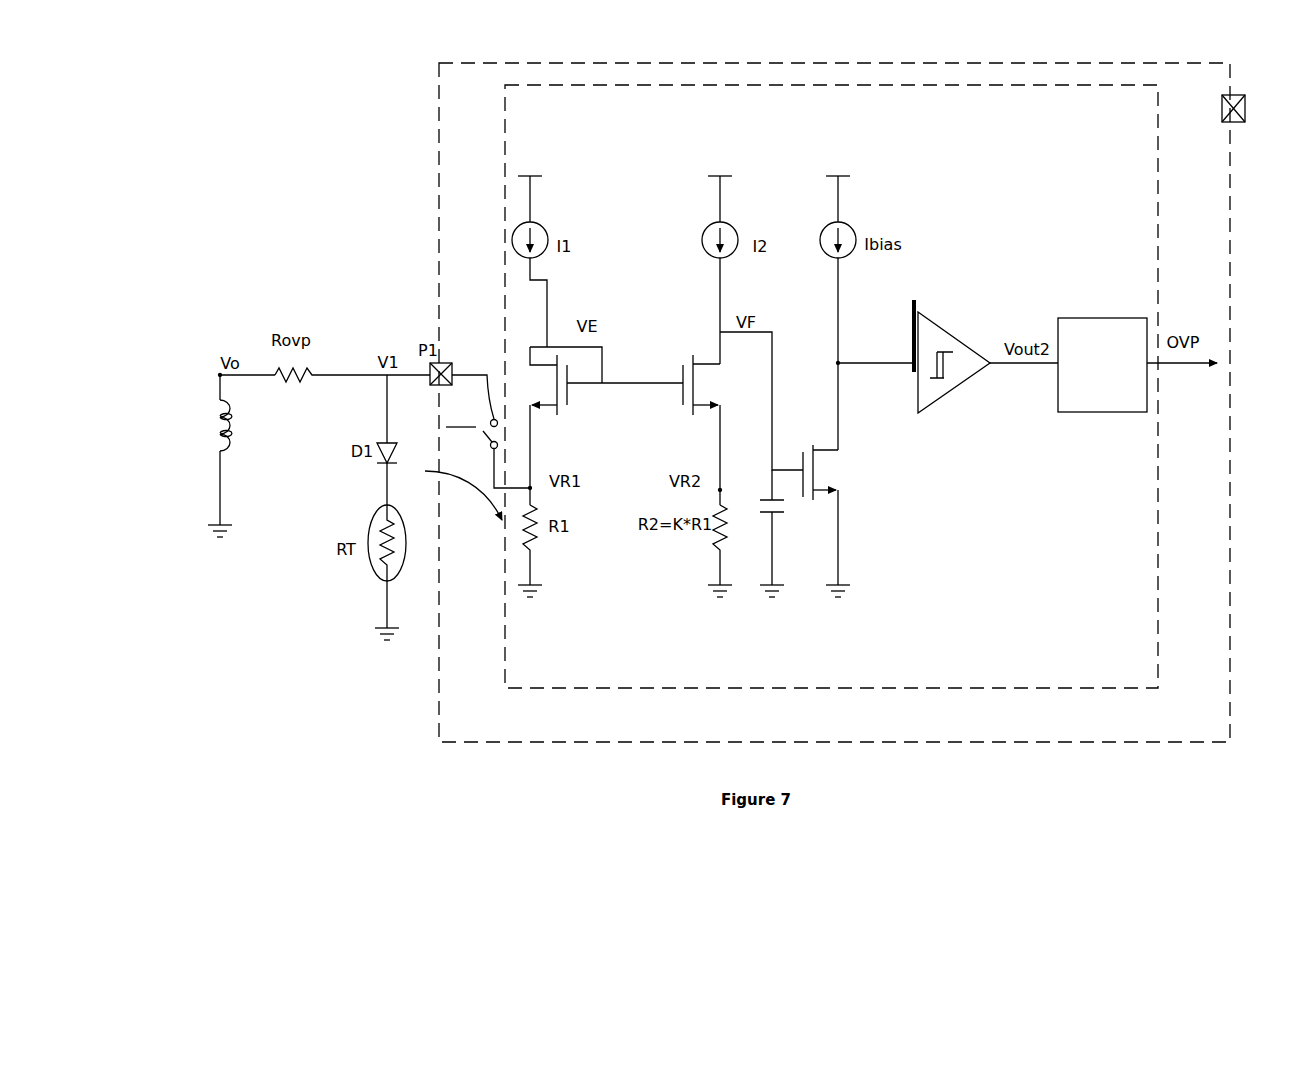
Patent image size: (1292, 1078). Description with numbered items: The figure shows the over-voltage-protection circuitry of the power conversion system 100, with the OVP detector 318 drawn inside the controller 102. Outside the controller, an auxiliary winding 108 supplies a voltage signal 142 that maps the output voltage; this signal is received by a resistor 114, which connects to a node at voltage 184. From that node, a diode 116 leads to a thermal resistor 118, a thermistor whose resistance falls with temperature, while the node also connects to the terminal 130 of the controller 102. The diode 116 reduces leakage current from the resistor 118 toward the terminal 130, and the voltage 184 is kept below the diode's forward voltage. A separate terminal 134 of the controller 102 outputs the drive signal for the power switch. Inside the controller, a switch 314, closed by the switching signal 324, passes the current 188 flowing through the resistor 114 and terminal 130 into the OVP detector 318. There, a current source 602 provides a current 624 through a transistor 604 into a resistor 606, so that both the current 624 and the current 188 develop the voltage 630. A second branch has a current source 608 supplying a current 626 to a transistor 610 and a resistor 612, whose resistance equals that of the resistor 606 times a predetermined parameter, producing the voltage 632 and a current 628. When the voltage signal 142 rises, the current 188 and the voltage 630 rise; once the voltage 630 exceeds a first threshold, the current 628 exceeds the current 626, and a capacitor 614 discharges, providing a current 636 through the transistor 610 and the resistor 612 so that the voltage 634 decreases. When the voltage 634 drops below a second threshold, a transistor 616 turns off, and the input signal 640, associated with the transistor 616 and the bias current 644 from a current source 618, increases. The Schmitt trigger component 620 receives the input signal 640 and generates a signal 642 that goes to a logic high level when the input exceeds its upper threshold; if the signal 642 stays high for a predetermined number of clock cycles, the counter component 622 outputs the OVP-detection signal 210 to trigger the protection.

The power conversion system 100 is at (322, 722).
The controller 102 is at (1230, 690).
The auxiliary winding 108 is at (222, 446).
The resistor 114 is at (293, 383).
The diode 116 is at (397, 448).
The resistor 118 is at (400, 562).
The terminal 130 is at (430, 386).
The terminal 134 is at (1242, 95).
The voltage signal 142 is at (218, 374).
The voltage 184 is at (387, 383).
The current 188 is at (463, 501).
The OVP-detection signal 210 is at (1190, 363).
The switch 314 is at (487, 375).
The OVP detector 318 is at (1022, 690).
The switching signal 324 is at (456, 427).
The current source 602 is at (538, 221).
The transistor 604 is at (565, 405).
The resistor 606 is at (530, 550).
The current source 608 is at (728, 221).
The transistor 610 is at (692, 359).
The resistor 612 is at (720, 549).
The capacitor 614 is at (774, 515).
The transistor 616 is at (813, 447).
The current source 618 is at (851, 254).
The Schmitt trigger component 620 is at (945, 331).
The counter component 622 is at (1095, 318).
The current 624 is at (540, 438).
The current 626 is at (733, 272).
The current 628 is at (705, 462).
The voltage 630 is at (530, 488).
The voltage 632 is at (720, 489).
The voltage 634 is at (760, 332).
The current 636 is at (762, 366).
The input signal 640 is at (884, 363).
The signal 642 is at (1030, 363).
The bias current 644 is at (845, 312).